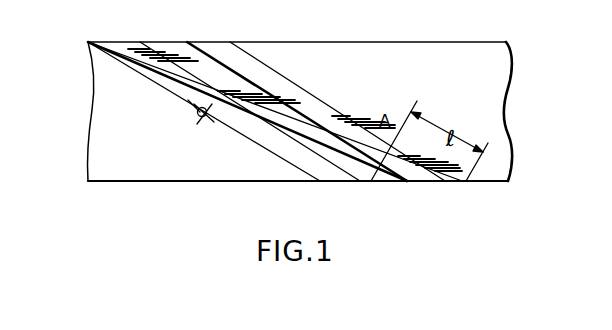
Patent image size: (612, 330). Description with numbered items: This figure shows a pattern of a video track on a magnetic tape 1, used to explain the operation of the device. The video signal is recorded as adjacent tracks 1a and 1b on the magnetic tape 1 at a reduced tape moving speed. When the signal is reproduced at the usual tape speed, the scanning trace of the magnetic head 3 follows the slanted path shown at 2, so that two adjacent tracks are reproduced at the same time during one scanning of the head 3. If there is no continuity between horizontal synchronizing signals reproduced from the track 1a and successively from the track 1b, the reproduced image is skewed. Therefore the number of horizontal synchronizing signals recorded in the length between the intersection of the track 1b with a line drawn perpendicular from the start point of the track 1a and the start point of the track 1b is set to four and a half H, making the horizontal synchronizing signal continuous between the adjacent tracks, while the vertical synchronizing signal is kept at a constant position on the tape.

The magnetic tape 1 is at (300, 111).
The track 1a is at (252, 120).
The track 1b is at (271, 72).
The scanning trace 2 is at (180, 62).
The magnetic head 3 is at (193, 128).